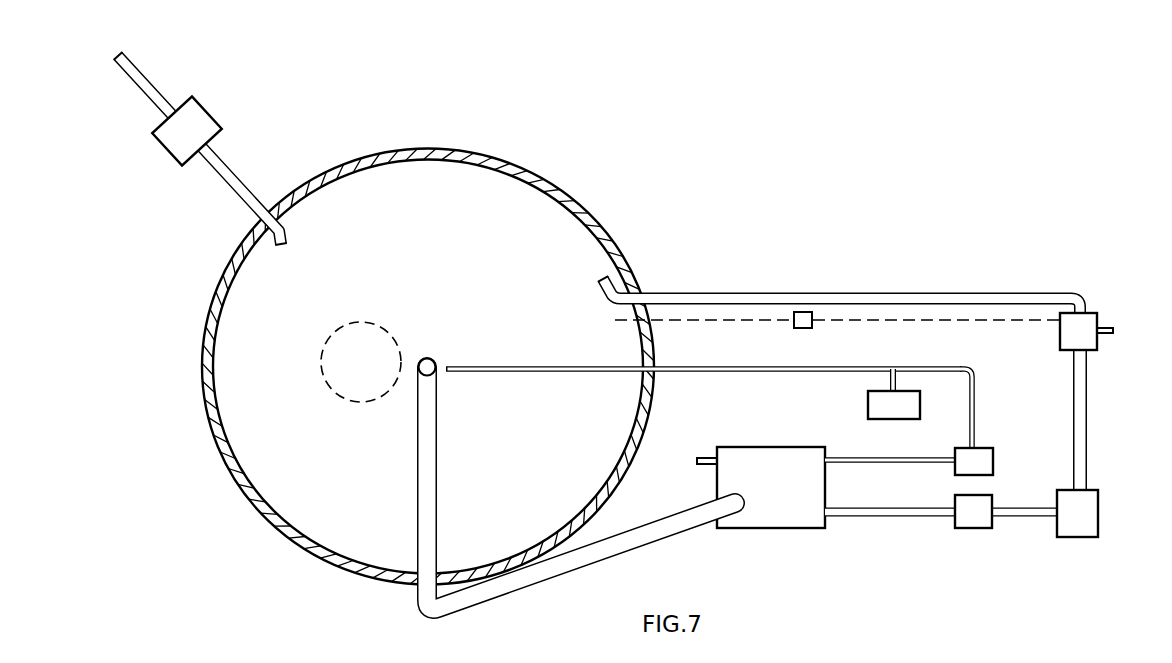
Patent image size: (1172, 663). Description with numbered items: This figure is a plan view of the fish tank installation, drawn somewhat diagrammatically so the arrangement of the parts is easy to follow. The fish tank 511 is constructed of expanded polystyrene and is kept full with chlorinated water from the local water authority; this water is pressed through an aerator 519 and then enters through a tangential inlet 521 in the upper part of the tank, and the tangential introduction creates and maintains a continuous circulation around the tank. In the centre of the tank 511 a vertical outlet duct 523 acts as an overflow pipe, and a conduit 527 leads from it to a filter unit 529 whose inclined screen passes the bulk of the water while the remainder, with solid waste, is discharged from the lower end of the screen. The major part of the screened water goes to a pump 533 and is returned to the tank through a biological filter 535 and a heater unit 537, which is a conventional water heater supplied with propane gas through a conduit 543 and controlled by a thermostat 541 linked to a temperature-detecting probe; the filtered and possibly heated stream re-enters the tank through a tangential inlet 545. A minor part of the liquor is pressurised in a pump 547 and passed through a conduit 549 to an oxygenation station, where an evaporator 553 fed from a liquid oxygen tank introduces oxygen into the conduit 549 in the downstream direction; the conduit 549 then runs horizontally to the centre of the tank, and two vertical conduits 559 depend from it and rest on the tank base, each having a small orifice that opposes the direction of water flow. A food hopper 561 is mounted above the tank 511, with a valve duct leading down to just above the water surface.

The fish tank 511 is at (587, 210).
The aerator 519 is at (192, 118).
The tangential inlet 521 is at (233, 188).
The vertical outlet duct 523 is at (433, 360).
The conduit 527 is at (607, 547).
The filter unit 529 is at (770, 505).
The pump 533 is at (975, 512).
The biological filter 535 is at (1080, 513).
The heater unit 537 is at (1077, 333).
The thermostat 541 is at (800, 327).
The conduit 543 is at (1105, 334).
The tangential inlet 545 is at (722, 300).
The pump 547 is at (973, 462).
The conduit 549 is at (922, 365).
The evaporator 553 is at (895, 407).
The vertical conduits 559 is at (583, 368).
The food hopper 561 is at (361, 362).